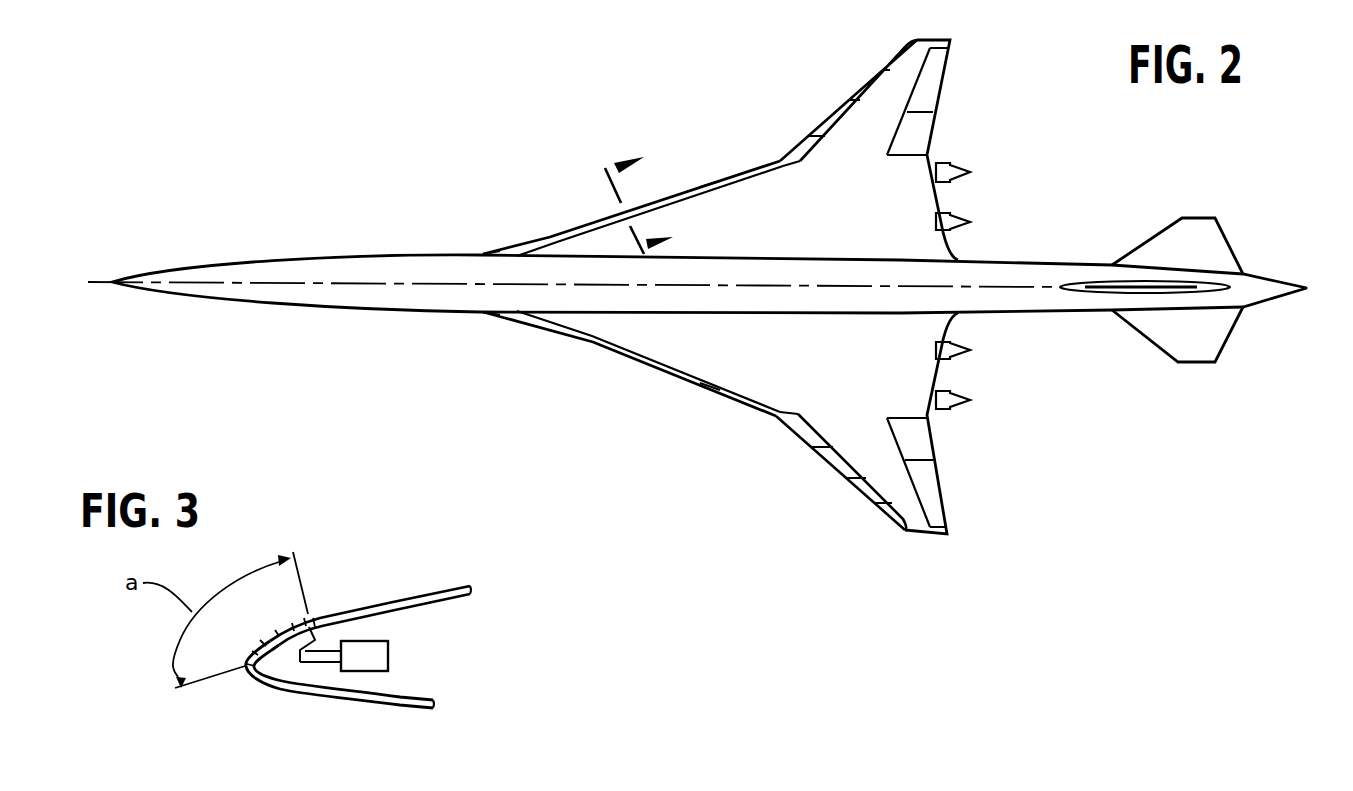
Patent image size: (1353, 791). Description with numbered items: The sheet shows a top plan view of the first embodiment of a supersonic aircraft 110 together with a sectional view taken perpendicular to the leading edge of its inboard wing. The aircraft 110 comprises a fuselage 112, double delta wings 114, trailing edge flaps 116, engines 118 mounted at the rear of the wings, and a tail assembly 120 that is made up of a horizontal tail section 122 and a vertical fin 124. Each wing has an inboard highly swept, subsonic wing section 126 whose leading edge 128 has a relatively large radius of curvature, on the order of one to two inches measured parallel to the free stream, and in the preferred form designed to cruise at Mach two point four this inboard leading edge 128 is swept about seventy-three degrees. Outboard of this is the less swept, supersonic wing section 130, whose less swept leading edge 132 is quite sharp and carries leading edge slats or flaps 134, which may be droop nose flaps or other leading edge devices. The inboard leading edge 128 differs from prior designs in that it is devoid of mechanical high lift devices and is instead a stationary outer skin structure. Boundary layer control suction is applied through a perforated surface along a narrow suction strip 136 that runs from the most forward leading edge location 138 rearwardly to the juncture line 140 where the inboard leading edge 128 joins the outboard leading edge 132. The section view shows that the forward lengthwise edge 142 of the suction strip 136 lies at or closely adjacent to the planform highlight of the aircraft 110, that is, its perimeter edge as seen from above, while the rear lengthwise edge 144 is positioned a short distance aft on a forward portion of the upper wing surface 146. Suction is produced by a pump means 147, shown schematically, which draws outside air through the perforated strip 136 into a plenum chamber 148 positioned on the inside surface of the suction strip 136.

In FIG. 2, the aircraft 110 is at (456, 169).
In FIG. 2, the fuselage 112 is at (365, 267).
In FIG. 2, the double delta wings 114 is at (873, 118).
In FIG. 2, the trailing edge flaps 116 is at (928, 95).
In FIG. 2, the engines 118 is at (967, 221).
In FIG. 2, the tail assembly 120 is at (1239, 215).
In FIG. 2, the horizontal tail section 122 is at (1217, 250).
In FIG. 2, the vertical fin 124 is at (1207, 287).
In FIG. 2, the inboard highly swept wing section 126 is at (697, 220).
In FIG. 2, the leading edge 128 is at (551, 242).
In FIG. 2, the outboard less swept wing section 130 is at (847, 177).
In FIG. 2, the less swept leading edge 132 is at (828, 118).
In FIG. 2, the leading edge slats or flaps 134 is at (853, 95).
In FIG. 2, the suction strip 136 is at (715, 182).
In FIG. 3, the suction strip 136 is at (306, 614).
In FIG. 2, the most forward leading edge location 138 is at (483, 252).
In FIG. 2, the juncture line 140 is at (778, 160).
In FIG. 3, the forward lengthwise edge 142 is at (249, 673).
In FIG. 3, the rear lengthwise edge 144 is at (308, 624).
In FIG. 3, the upper wing surface 146 is at (462, 587).
In FIG. 3, the pump means 147 is at (388, 655).
In FIG. 3, the plenum chamber 148 is at (287, 653).